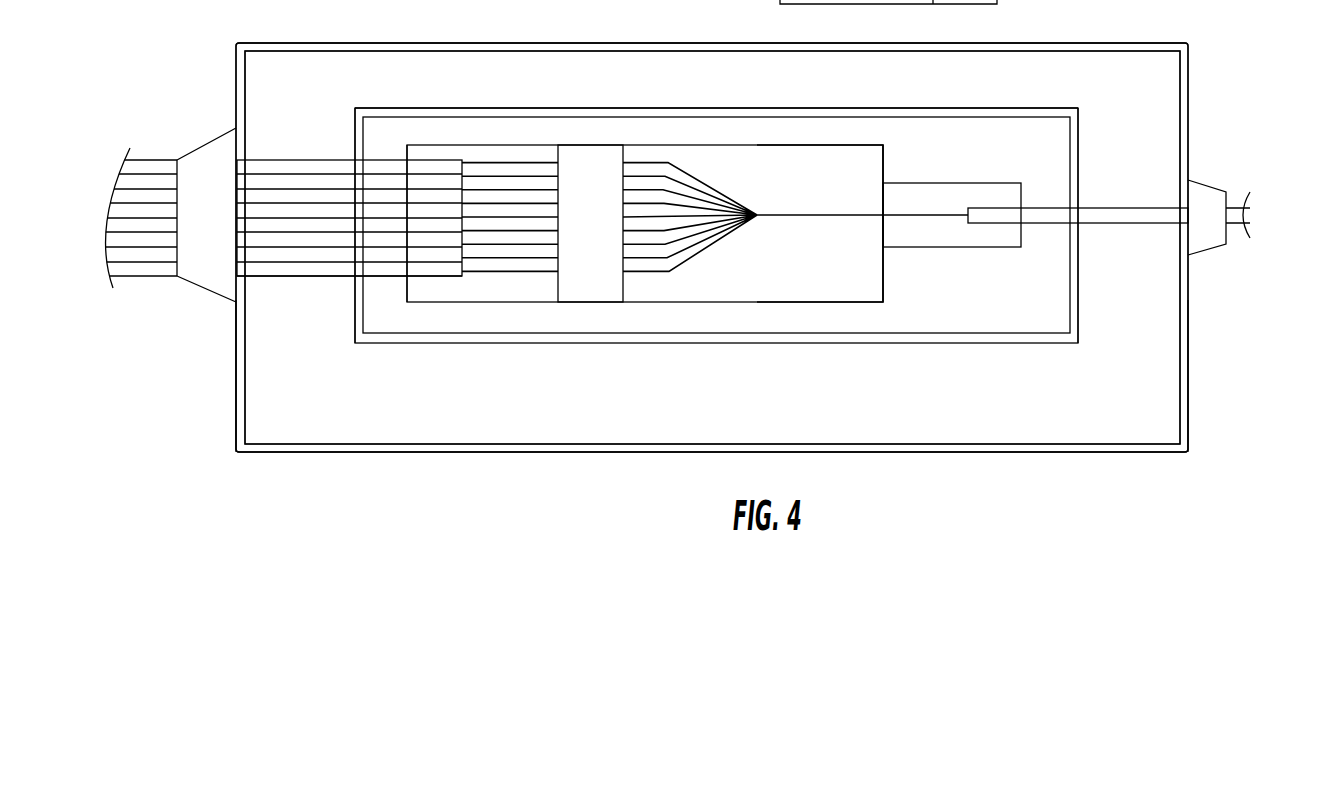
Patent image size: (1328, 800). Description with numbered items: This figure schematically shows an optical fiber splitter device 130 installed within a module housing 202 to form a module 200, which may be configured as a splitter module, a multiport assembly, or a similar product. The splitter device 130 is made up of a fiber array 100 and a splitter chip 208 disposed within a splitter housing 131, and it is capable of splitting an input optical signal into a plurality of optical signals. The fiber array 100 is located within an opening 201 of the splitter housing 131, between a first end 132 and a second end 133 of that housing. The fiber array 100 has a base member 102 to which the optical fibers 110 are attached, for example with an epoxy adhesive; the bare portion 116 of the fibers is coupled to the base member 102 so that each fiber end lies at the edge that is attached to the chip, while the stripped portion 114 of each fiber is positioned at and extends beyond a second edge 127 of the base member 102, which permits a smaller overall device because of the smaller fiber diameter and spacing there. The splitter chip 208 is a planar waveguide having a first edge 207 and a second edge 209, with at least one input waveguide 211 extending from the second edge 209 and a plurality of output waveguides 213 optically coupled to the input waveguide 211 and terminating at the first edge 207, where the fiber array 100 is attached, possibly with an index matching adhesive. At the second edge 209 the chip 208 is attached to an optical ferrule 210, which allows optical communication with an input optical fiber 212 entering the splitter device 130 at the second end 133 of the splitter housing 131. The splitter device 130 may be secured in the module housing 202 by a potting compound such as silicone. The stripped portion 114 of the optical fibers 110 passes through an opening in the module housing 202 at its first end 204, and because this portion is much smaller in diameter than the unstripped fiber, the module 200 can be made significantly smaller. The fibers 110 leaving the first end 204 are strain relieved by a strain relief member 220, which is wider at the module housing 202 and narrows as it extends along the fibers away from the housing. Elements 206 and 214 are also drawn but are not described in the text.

The optical fiber array 100 is at (486, 312).
The base member 102 is at (449, 145).
The optical fibers 110 is at (277, 160).
The stripped portion 114 is at (292, 277).
The bare portion 116 is at (513, 163).
The second edge 127 is at (869, 15).
The optical fiber splitter device 130 is at (524, 100).
The splitter housing 131 is at (864, 108).
The first end 132 is at (355, 134).
The second end 133 is at (1080, 297).
The module 200 is at (1194, 58).
The opening 201 is at (1022, 323).
The module housing 202 is at (960, 452).
The first end 204 is at (236, 368).
The housing right end wall 206 is at (1188, 379).
The first edge 207 is at (624, 287).
The splitter chip 208 is at (738, 302).
The second edge 209 is at (883, 276).
The optical ferrule 210 is at (988, 183).
The input waveguide 211 is at (806, 215).
The input optical fiber 212 is at (912, 215).
The output waveguides 213 is at (712, 175).
The output connector 214 is at (1190, 254).
The strain relief member 220 is at (203, 146).